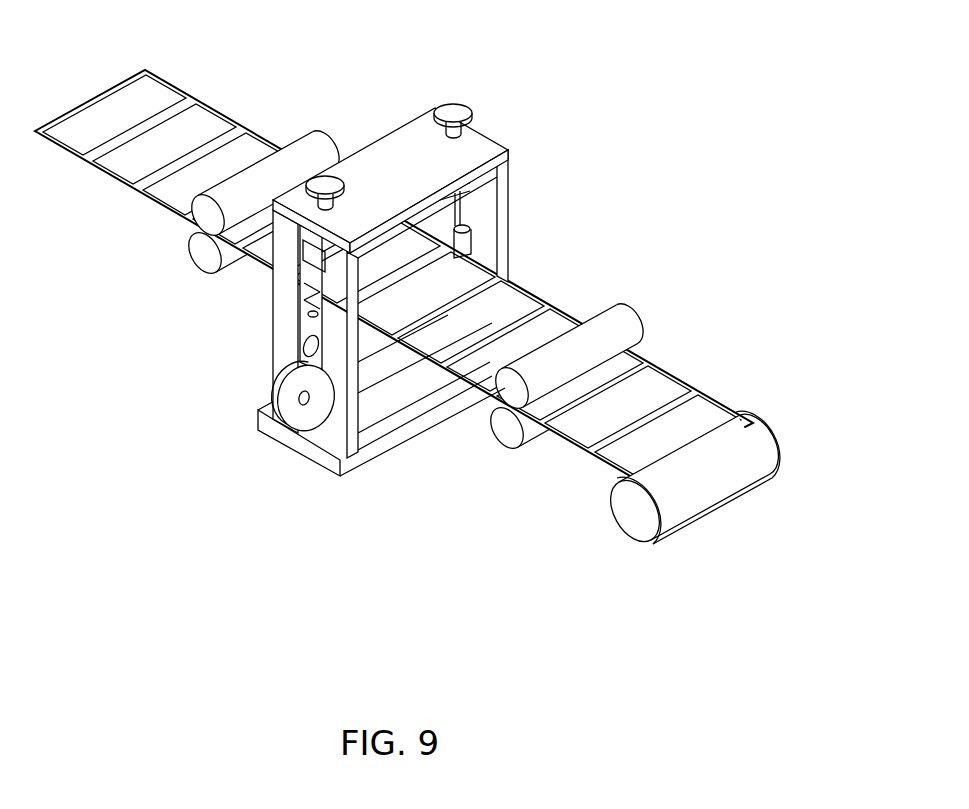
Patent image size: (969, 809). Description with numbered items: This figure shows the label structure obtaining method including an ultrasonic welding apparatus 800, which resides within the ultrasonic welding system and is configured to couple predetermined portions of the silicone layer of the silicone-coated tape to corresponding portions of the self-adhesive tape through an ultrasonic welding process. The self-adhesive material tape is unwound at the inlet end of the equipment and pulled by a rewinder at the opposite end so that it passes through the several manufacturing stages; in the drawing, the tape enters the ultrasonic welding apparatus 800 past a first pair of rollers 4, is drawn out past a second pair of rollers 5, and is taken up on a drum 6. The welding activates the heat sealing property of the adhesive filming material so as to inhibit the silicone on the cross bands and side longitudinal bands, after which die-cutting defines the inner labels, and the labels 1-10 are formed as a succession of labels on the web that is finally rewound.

The ultrasonic welding apparatus 800 is at (383, 238).
The upstream pressing rollers 4 is at (264, 160).
The end cross bands 5 is at (567, 345).
The take-up drum 6 is at (690, 498).
The label web with labels 1-10 is at (397, 275).